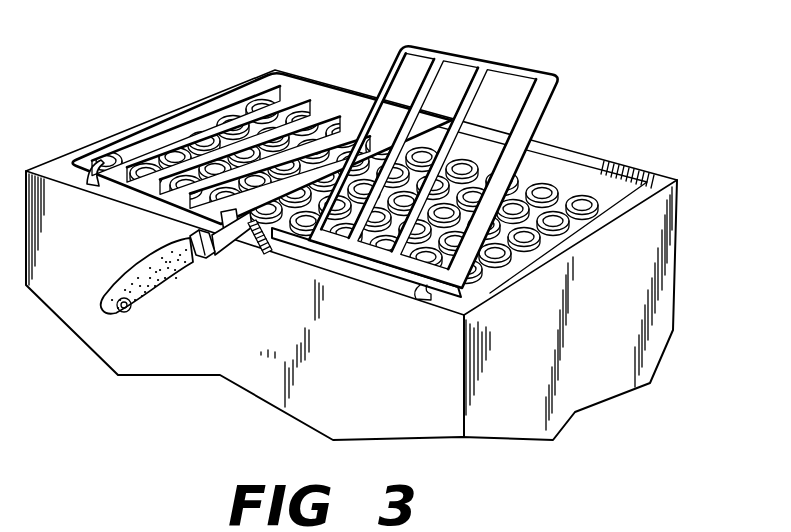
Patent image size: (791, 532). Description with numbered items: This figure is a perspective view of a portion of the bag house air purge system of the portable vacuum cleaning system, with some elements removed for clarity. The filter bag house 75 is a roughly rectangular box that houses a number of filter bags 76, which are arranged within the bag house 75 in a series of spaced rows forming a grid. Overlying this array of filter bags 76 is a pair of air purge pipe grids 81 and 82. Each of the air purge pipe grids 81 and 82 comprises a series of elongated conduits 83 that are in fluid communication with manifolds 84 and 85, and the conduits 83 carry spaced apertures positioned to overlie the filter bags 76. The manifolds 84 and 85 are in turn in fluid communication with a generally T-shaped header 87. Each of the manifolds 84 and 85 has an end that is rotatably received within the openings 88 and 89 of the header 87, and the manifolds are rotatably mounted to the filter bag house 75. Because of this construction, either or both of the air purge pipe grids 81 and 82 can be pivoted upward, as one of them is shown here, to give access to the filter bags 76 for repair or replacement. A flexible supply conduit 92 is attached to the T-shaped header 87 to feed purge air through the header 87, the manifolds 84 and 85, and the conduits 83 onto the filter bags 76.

The filter bag house 75 is at (575, 136).
The filter bags 76 is at (556, 228).
The air purge pipe grid 81 is at (297, 85).
The air purge pipe grid 82 is at (529, 72).
The elongated conduits 83 is at (217, 122).
The manifold 84 is at (118, 180).
The manifold 85 is at (383, 270).
The T-shaped header 87 is at (241, 250).
The opening 88 is at (303, 222).
The opening 89 is at (212, 249).
The flexible supply conduit 92 is at (150, 300).